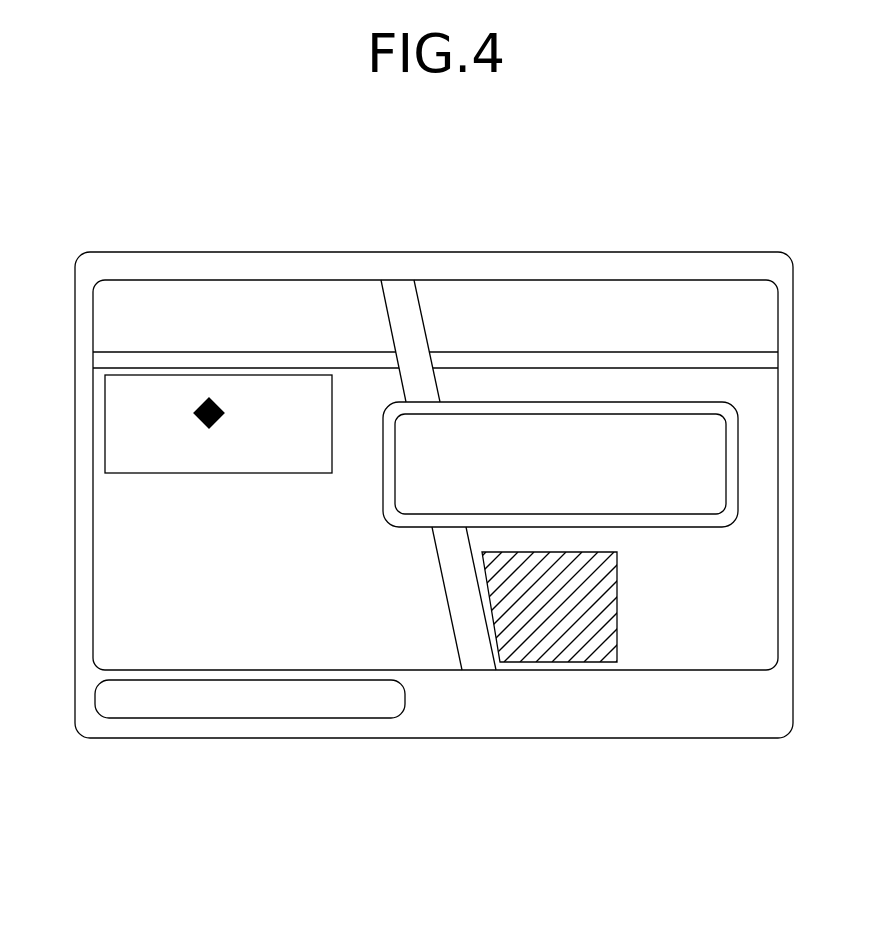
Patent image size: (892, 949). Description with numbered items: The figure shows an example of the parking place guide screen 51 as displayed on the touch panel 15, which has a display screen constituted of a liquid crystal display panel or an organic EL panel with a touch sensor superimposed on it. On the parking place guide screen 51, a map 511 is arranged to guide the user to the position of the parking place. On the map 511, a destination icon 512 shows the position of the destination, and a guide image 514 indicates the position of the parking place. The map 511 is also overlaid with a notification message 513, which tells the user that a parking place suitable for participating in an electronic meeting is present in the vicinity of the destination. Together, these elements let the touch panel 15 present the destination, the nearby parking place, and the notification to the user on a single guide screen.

The touch panel 15 is at (157, 250).
The parking place guide screen 51 is at (640, 268).
The map 511 is at (507, 278).
The destination icon 512 is at (210, 397).
The notification message 513 is at (667, 528).
The guide image 514 is at (570, 612).